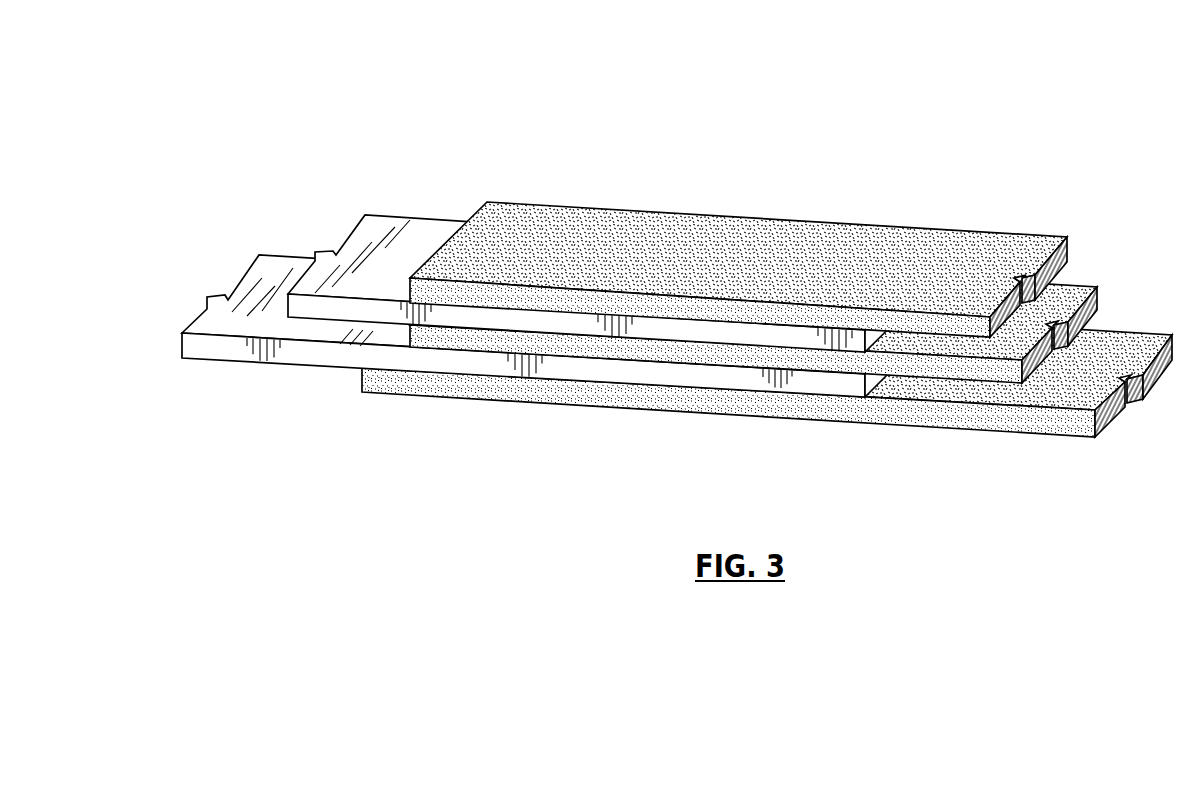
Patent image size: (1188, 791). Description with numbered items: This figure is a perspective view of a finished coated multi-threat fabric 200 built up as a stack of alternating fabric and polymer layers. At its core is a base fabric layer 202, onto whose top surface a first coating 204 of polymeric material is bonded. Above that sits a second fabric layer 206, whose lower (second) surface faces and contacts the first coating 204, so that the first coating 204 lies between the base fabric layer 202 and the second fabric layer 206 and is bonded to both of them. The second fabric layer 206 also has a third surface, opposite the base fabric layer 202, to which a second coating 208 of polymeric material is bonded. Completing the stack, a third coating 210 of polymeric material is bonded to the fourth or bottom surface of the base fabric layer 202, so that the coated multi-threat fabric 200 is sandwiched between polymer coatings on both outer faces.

The coated multi-threat fabric 200 is at (673, 265).
The base fabric layer 202 is at (245, 290).
The first coating 204 is at (1079, 289).
The second fabric layer 206 is at (412, 229).
The second coating 208 is at (887, 233).
The third coating 210 is at (672, 402).